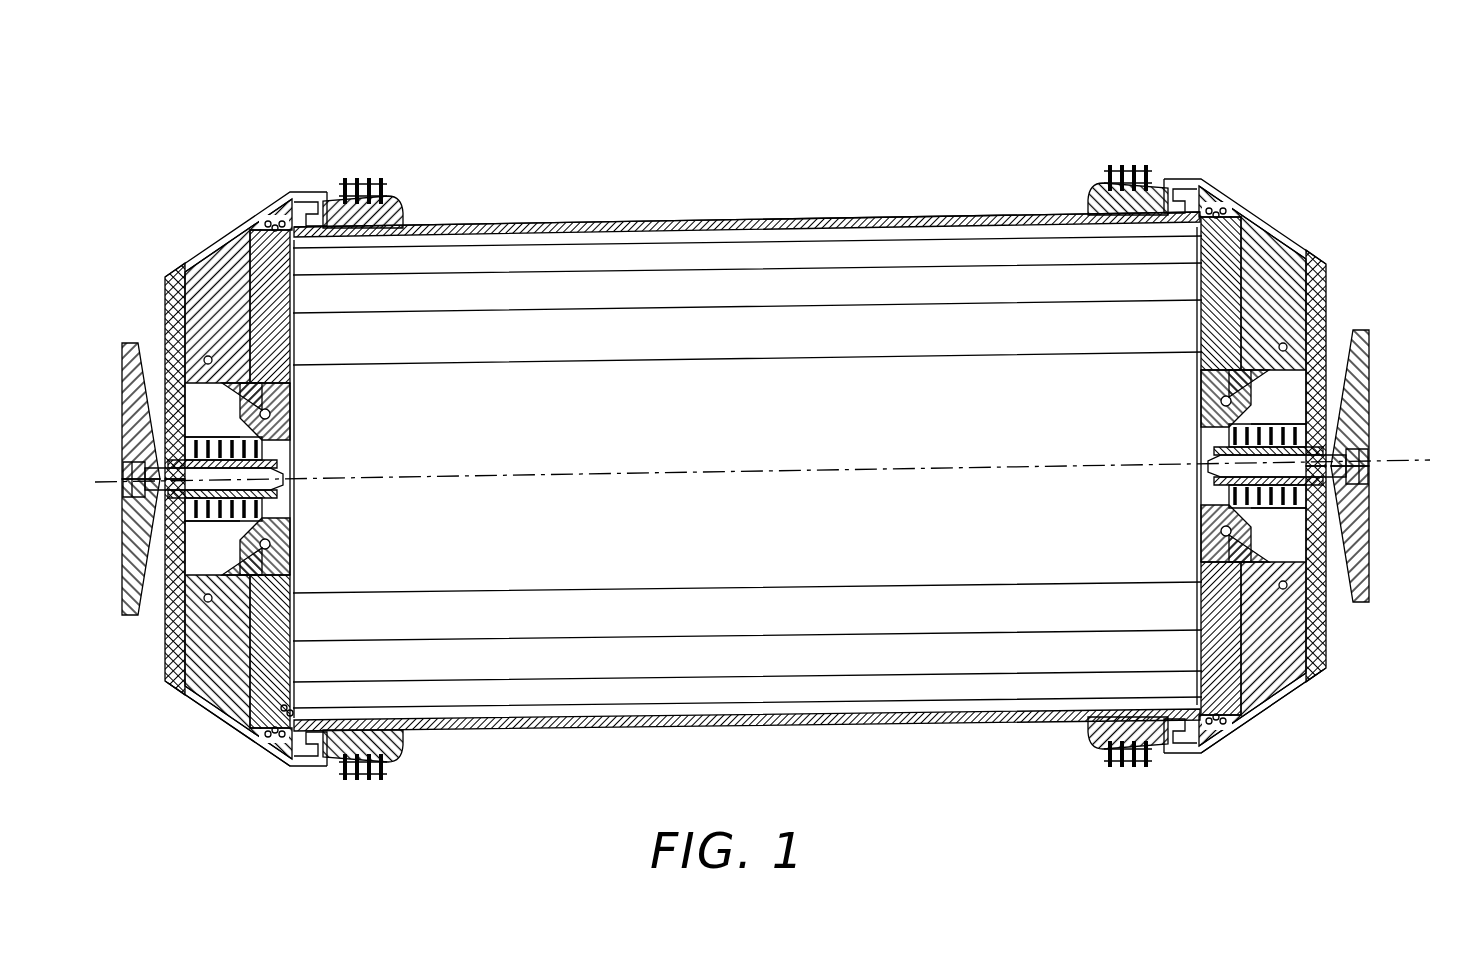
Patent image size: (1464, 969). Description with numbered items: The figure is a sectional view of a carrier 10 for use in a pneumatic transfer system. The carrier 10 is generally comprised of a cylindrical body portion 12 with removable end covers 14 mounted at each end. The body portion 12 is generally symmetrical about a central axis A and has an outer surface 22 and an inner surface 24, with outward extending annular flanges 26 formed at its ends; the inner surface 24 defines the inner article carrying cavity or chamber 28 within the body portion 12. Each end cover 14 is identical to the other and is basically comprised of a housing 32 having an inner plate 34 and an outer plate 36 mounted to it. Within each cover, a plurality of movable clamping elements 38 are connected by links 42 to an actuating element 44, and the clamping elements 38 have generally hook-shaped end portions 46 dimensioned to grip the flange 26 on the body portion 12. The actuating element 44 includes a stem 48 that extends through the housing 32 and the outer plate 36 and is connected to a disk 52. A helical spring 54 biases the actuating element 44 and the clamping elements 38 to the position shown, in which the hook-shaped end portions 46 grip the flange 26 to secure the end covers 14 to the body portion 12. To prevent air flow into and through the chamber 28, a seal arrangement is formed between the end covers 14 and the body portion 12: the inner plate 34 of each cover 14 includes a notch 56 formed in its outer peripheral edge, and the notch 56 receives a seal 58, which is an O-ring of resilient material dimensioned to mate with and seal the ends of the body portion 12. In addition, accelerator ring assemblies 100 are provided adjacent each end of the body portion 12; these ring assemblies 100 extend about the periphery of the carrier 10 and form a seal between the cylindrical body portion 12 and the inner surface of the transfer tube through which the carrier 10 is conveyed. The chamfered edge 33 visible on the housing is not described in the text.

The carrier 10 is at (738, 125).
The cylindrical body portion 12 is at (515, 222).
The end cover 14 is at (222, 212).
The outer surface 22 is at (808, 226).
The inner surface 24 is at (778, 238).
The annular flange 26 is at (305, 242).
The chamber 28 is at (556, 406).
The housing 32 is at (1300, 700).
The chamfered edge 33 is at (210, 730).
The inner plate 34 is at (280, 636).
The outer plate 36 is at (168, 688).
The clamping element 38 is at (215, 247).
The link 42 is at (290, 565).
The actuating element 44 is at (290, 508).
The hook-shaped end portion 46 is at (325, 194).
The stem 48 is at (280, 480).
The disk 52 is at (138, 345).
The helical spring 54 is at (290, 452).
The notch 56 is at (296, 695).
The seal 58 is at (285, 240).
The accelerator ring assembly 100 is at (395, 152).
The central axis A is at (945, 403).